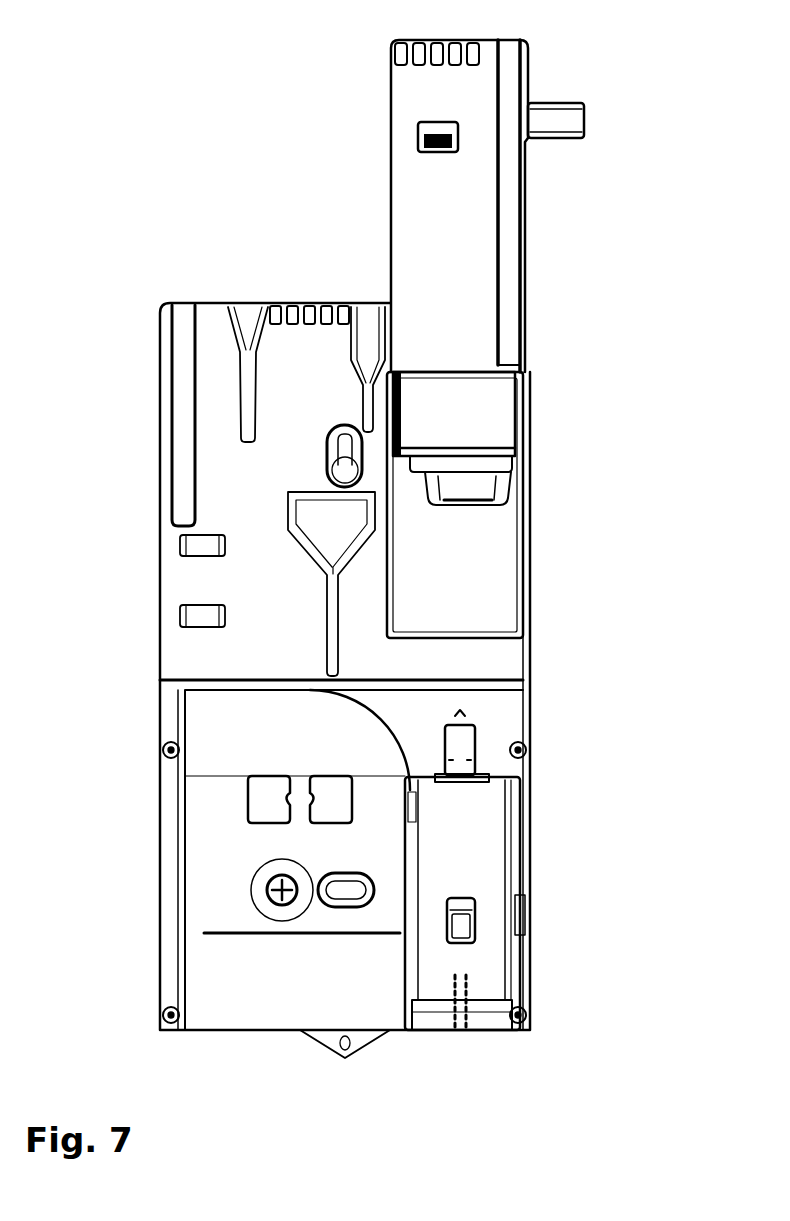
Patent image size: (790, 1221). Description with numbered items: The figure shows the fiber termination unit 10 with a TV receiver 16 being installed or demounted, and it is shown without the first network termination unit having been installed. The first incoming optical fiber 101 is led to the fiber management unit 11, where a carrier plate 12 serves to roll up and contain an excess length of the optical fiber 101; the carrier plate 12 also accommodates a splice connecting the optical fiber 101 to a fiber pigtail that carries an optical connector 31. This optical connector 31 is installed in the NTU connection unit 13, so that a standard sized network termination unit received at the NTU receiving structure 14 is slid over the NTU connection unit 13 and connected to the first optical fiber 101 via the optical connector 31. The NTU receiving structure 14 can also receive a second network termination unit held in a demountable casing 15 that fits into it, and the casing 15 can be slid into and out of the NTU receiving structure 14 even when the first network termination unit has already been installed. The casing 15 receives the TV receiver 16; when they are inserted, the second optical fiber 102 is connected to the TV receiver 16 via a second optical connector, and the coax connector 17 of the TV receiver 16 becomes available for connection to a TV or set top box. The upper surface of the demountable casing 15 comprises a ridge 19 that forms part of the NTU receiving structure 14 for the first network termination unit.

The fiber termination unit 10 is at (158, 172).
The fiber management unit 11 is at (212, 806).
The carrier plate 12 is at (401, 695).
The NTU connection unit 13 is at (480, 848).
The NTU receiving structure 14 is at (212, 352).
The demountable casing 15 is at (392, 105).
The TV receiver 16 is at (478, 417).
The coax connector 17 is at (566, 143).
The ridge 19 is at (514, 245).
The optical connector 31 is at (478, 740).
The first incoming optical fiber 101 is at (455, 1032).
The second optical fiber 102 is at (466, 1032).